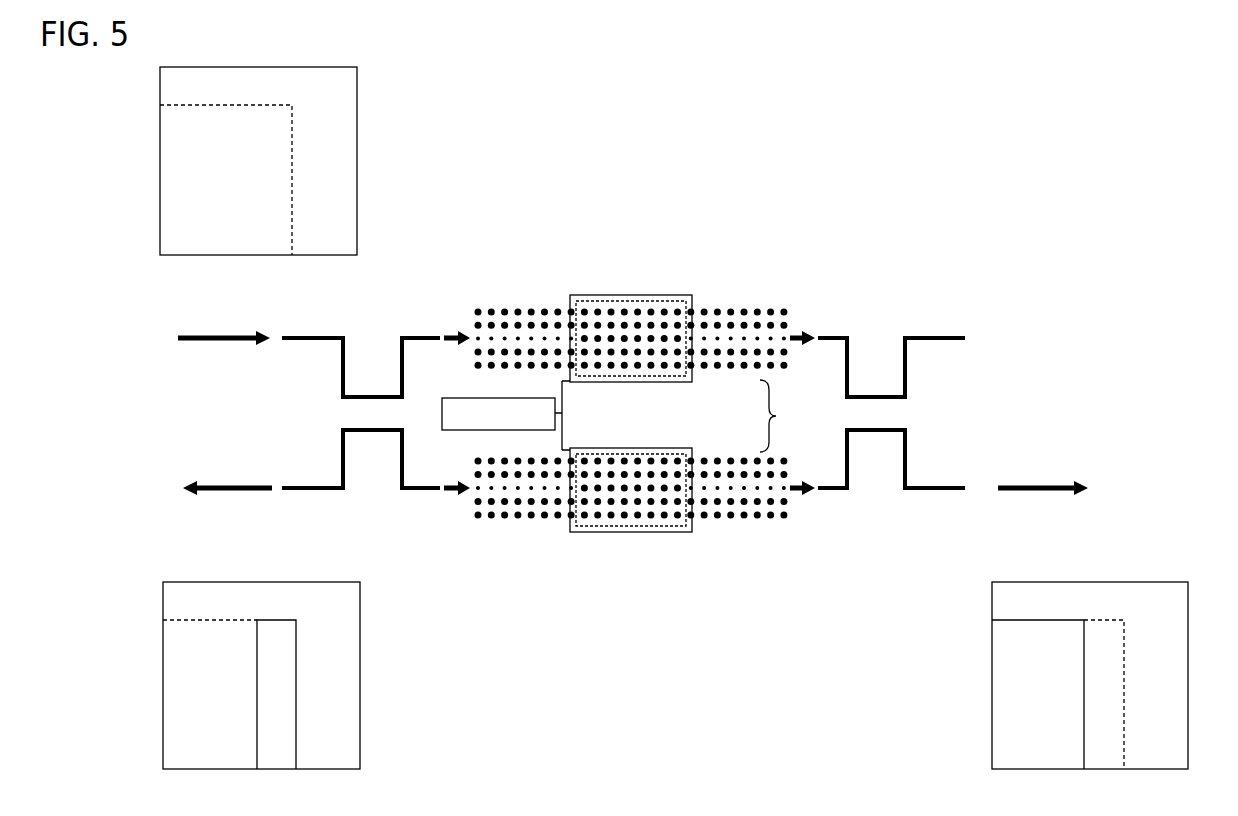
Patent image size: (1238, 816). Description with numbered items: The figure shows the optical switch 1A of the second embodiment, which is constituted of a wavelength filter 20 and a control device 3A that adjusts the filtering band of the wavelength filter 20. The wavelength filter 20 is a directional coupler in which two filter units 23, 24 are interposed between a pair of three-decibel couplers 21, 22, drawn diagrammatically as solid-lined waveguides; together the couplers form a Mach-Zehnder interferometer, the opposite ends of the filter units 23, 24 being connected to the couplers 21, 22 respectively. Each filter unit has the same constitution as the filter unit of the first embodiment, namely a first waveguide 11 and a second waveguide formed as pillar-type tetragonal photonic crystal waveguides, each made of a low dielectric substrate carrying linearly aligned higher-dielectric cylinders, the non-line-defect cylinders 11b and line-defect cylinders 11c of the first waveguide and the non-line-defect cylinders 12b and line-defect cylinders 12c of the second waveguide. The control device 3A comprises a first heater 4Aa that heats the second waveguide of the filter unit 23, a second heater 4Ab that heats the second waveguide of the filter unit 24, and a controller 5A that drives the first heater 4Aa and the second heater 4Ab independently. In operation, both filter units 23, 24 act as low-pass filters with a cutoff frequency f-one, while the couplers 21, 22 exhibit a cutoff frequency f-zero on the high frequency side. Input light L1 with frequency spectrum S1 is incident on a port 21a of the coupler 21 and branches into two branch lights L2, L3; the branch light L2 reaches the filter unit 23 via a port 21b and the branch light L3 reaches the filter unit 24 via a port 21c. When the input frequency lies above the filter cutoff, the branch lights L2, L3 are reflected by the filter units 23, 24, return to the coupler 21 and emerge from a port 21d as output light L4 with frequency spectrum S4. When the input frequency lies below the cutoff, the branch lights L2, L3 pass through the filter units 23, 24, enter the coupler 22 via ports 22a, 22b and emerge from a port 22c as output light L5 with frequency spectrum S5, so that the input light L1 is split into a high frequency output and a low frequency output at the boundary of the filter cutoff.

The optical switch 1A is at (672, 143).
The wavelength filter 20 is at (754, 165).
The first waveguide 11 is at (503, 310).
The filter unit 23 is at (522, 302).
The filter unit 24 is at (556, 519).
The non-line-defect cylinders 12b is at (663, 515).
The line-defect cylinders 12c is at (605, 492).
The non-line-defect cylinders 11b is at (703, 518).
The line-defect cylinders 11c is at (757, 490).
The 3 dB coupler 21 is at (351, 422).
The port 21a is at (288, 342).
The port 21b is at (425, 335).
The port 21c is at (403, 492).
The port 21d is at (288, 492).
The 3 dB coupler 22 is at (882, 416).
The port 22a is at (823, 334).
The port 22b is at (846, 492).
The port 22c is at (918, 492).
The first heater 4Aa is at (644, 331).
The second heater 4Ab is at (692, 448).
The controller 5A is at (563, 402).
The control device 3A is at (779, 416).
The input light L1 is at (182, 333).
The branch light L2 is at (454, 332).
The branch light L3 is at (456, 495).
The output light L4 is at (210, 492).
The output light L5 is at (1018, 492).
The frequency spectrum S1 is at (357, 98).
The frequency spectrum S4 is at (360, 670).
The frequency spectrum S5 is at (990, 762).